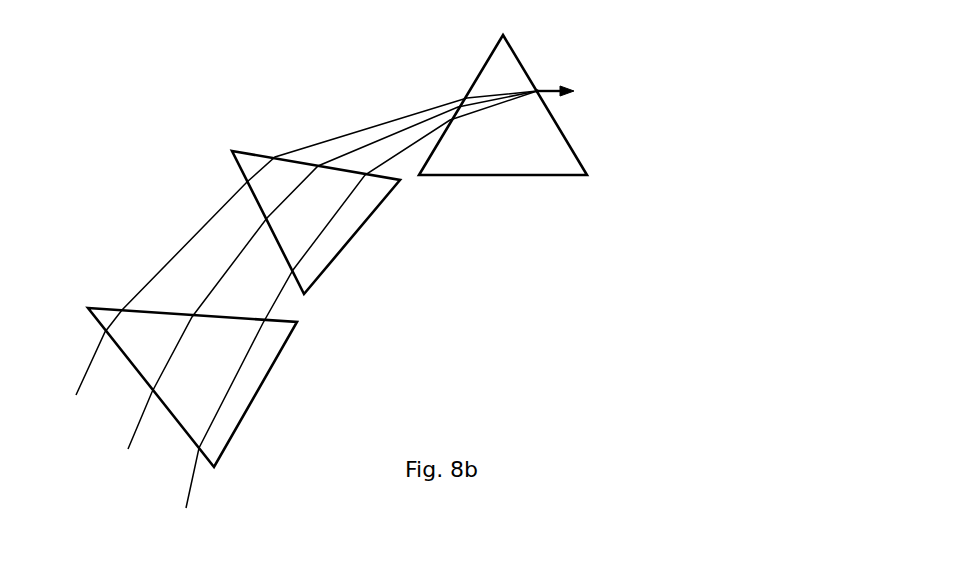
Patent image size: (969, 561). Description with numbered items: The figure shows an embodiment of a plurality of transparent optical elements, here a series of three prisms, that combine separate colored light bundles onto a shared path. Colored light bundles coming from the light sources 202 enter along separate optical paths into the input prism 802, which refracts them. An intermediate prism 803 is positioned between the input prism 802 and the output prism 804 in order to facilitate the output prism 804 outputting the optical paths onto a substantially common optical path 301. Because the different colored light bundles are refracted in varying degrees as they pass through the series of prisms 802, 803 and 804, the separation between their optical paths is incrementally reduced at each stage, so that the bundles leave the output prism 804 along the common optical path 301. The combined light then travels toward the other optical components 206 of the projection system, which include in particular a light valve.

The light sources 202 is at (273, 312).
The input prism 802 is at (255, 393).
The intermediate prism 803 is at (343, 250).
The output prism 804 is at (502, 176).
The substantially common optical path 301 is at (543, 85).
The other optical components 206 is at (638, 89).